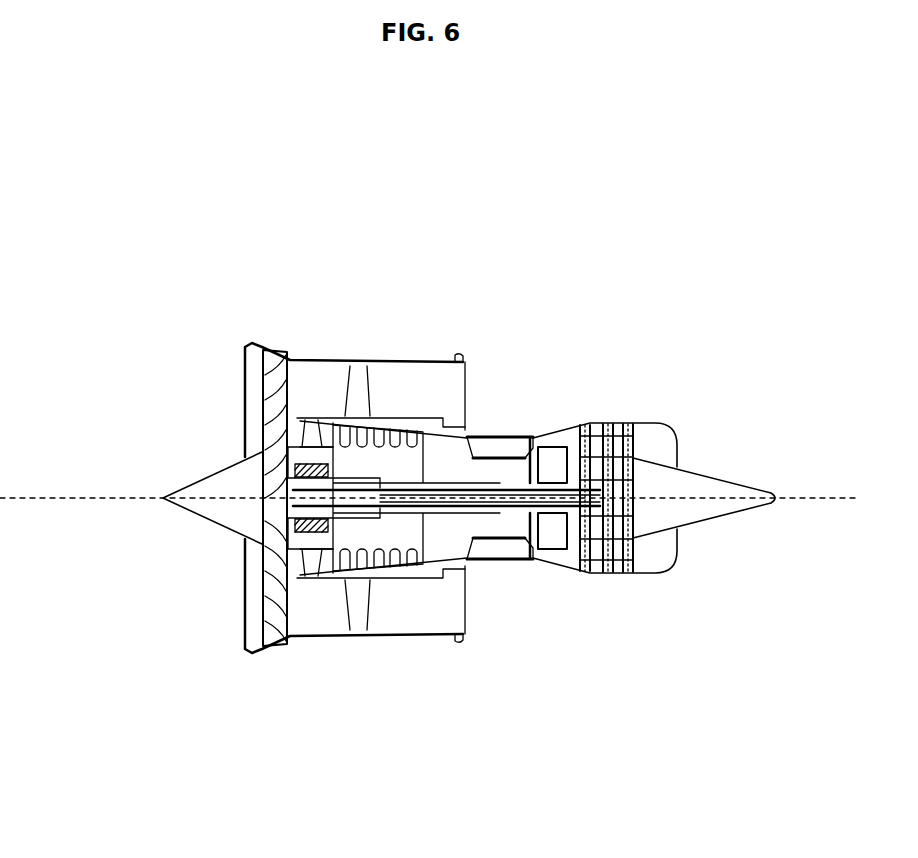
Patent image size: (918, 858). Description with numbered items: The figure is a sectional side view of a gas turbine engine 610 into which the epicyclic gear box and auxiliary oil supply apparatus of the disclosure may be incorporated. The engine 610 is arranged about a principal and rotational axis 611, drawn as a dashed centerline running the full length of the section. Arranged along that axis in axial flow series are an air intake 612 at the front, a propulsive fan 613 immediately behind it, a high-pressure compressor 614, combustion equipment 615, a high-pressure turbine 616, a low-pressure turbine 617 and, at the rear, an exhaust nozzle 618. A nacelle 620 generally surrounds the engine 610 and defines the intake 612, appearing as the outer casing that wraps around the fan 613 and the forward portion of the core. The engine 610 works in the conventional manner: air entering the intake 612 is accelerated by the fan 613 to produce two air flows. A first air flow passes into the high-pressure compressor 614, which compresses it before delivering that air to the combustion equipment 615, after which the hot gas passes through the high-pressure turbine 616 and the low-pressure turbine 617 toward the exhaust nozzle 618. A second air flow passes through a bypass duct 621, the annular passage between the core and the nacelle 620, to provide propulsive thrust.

The gas turbine engine 610 is at (536, 380).
The principal and rotational axis 611 is at (157, 497).
The air intake 612 is at (245, 402).
The propulsive fan 613 is at (272, 352).
The high-pressure compressor 614 is at (408, 458).
The combustion equipment 615 is at (490, 440).
The high-pressure turbine 616 is at (577, 440).
The low-pressure turbine 617 is at (660, 427).
The exhaust nozzle 618 is at (664, 453).
The nacelle 620 is at (312, 642).
The bypass duct 621 is at (410, 618).